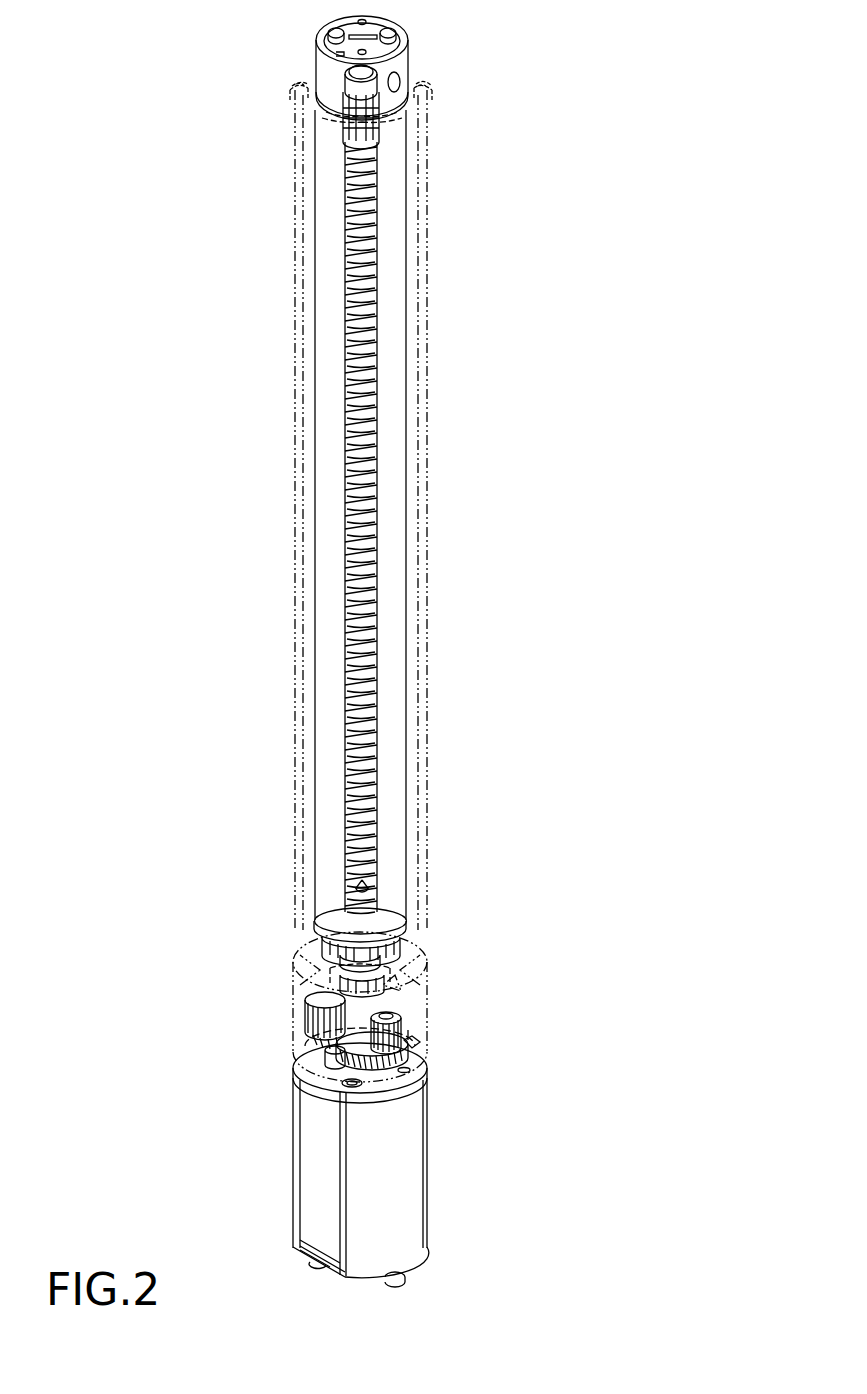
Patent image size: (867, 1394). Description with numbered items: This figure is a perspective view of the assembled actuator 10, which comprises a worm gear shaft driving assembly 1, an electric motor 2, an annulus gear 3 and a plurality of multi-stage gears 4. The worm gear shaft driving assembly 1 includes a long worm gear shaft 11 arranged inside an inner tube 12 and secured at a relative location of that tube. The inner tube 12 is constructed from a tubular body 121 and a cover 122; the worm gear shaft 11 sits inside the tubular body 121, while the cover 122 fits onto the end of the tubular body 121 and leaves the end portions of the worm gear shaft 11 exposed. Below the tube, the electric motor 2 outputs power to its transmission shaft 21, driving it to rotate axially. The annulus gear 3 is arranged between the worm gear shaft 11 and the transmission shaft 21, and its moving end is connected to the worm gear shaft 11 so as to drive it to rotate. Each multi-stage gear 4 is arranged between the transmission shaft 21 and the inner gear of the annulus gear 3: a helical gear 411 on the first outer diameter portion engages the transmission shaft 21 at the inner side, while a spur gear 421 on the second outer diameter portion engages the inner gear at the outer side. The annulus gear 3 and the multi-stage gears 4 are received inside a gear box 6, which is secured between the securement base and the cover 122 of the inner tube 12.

The actuator 10 is at (216, 33).
The worm gear shaft driving assembly 1 is at (428, 385).
The worm gear shaft 11 is at (378, 432).
The inner tube 12 is at (545, 863).
The tubular body 121 is at (427, 828).
The cover 122 is at (430, 952).
The electric motor 2 is at (418, 1180).
The transmission shaft 21 is at (305, 1050).
The annulus gear 3 is at (430, 1010).
The multi-stage gears 4 is at (430, 1050).
The helical gear 411 is at (428, 1060).
The spur gear 421 is at (430, 1020).
The gear box 6 is at (297, 1010).